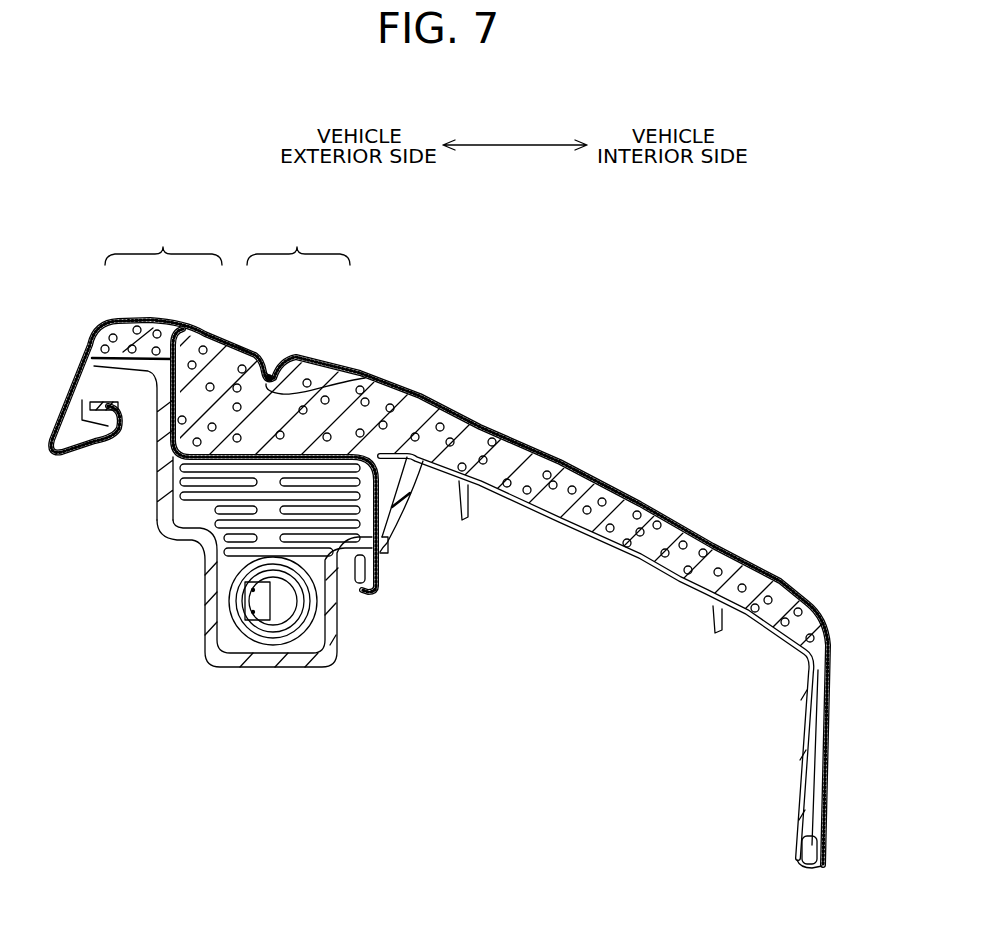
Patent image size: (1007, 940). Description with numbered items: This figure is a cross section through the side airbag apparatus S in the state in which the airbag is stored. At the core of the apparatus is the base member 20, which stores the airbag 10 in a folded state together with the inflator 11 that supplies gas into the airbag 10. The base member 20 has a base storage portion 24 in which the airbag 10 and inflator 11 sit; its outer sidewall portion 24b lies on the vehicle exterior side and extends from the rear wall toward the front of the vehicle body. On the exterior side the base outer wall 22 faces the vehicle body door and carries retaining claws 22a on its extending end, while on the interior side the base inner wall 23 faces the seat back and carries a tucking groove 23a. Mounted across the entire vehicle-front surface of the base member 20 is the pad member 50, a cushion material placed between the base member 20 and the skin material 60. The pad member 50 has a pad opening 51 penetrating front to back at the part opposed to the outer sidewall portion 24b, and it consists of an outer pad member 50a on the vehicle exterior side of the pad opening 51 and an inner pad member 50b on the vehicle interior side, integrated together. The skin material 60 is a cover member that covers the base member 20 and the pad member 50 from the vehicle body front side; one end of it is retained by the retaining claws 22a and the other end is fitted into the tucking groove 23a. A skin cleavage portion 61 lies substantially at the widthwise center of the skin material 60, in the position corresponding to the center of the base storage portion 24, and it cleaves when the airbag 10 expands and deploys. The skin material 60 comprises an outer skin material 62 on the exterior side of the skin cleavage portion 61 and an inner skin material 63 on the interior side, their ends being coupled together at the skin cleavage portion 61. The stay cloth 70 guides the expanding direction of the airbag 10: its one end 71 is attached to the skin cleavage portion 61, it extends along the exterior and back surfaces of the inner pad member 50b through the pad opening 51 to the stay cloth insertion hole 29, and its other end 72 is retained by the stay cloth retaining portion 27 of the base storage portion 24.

The side airbag apparatus S is at (138, 156).
The airbag 10 is at (167, 535).
The inflator 11 is at (243, 635).
The base member 20 is at (601, 662).
The base outer wall 22 is at (83, 466).
The retaining claws 22a is at (87, 417).
The base inner wall 23 is at (751, 769).
The tucking groove 23a is at (803, 826).
The base storage portion 24 is at (249, 594).
The outer sidewall portion 24b is at (208, 583).
The stay cloth retaining portion 27 is at (368, 565).
The stay cloth insertion hole 29 is at (398, 550).
The pad member 50 is at (234, 407).
The outer pad member 50a is at (123, 343).
The inner pad member 50b is at (222, 357).
The pad opening 51 is at (181, 327).
The skin material 60 is at (300, 308).
The skin cleavage portion 61 is at (275, 368).
The outer skin material 62 is at (247, 338).
The inner skin material 63 is at (323, 355).
The stay cloth 70 is at (385, 463).
The one end of stay cloth 71 is at (302, 398).
The other end of stay cloth 72 is at (377, 591).